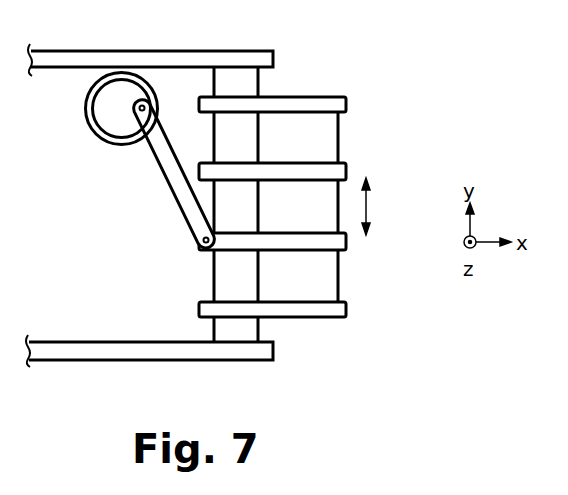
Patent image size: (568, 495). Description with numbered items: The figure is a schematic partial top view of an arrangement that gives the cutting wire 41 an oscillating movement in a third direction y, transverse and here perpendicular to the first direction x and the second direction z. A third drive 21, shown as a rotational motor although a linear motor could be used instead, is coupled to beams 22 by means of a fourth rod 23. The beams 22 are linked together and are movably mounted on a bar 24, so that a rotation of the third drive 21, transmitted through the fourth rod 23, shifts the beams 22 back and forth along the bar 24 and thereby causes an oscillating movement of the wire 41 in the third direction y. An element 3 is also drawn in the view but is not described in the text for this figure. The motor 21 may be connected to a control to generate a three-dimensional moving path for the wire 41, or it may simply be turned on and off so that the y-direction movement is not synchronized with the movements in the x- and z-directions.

The base guide bar 3 is at (127, 348).
The third drive 21 is at (110, 120).
The beams 22 is at (306, 102).
The fourth rod 23 is at (177, 180).
The bar 24 is at (248, 221).
The wire 41 is at (338, 143).